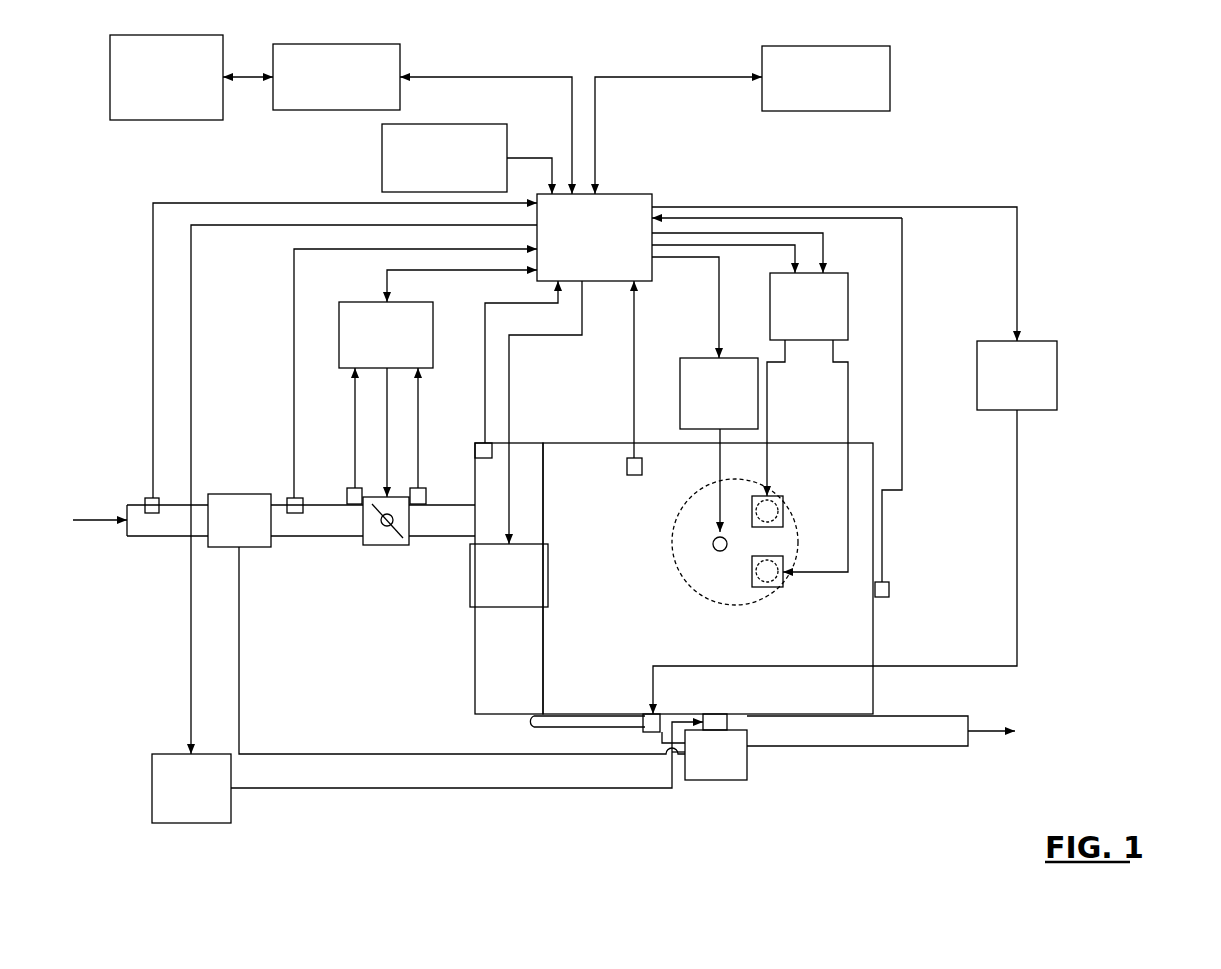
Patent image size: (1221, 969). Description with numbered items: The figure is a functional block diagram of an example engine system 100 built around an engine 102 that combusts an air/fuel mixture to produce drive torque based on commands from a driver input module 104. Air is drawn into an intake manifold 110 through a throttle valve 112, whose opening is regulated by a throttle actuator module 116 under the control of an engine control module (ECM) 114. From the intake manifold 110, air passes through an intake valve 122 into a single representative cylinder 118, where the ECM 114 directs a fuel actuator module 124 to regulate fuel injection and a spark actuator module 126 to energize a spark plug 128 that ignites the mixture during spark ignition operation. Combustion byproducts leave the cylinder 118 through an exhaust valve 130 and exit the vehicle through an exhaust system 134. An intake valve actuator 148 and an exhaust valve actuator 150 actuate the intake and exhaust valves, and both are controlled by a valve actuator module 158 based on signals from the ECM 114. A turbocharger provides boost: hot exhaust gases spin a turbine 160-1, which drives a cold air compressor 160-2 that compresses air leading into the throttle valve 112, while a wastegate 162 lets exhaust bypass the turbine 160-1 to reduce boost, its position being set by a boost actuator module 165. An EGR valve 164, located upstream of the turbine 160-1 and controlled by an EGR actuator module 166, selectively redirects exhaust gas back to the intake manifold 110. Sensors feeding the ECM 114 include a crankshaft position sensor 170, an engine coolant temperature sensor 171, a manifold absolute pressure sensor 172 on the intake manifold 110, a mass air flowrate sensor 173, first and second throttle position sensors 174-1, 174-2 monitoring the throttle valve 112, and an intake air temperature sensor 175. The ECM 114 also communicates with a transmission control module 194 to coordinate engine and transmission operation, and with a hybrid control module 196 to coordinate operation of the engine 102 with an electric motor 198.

The engine system 100 is at (1130, 48).
The engine 102 is at (587, 443).
The driver input module 104 is at (382, 158).
The intake manifold 110 is at (475, 650).
The throttle valve 112 is at (380, 547).
The engine control module (ECM) 114 is at (653, 194).
The throttle actuator module 116 is at (360, 302).
The cylinder 118 is at (700, 597).
The intake valve 122 is at (783, 496).
The fuel actuator module 124 is at (528, 607).
The spark actuator module 126 is at (697, 357).
The spark plug 128 is at (713, 546).
The exhaust valve 130 is at (783, 590).
The exhaust system 134 is at (515, 820).
The intake valve actuator 148 is at (783, 511).
The exhaust valve actuator 150 is at (767, 588).
The valve actuator module 158 is at (849, 285).
The turbine 160-1 is at (747, 762).
The cold air compressor 160-2 is at (258, 548).
The wastegate 162 is at (727, 714).
The EGR valve 164 is at (650, 732).
The boost actuator module 165 is at (230, 815).
The EGR actuator module 166 is at (990, 341).
The crankshaft position sensor 170 is at (889, 585).
The engine coolant temperature (ECT) sensor 171 is at (634, 475).
The manifold absolute pressure (MAP) sensor 172 is at (480, 443).
The mass air flowrate (MAF) sensor 173 is at (288, 498).
The first throttle position sensor 174-1 is at (352, 505).
The second throttle position sensor 174-2 is at (417, 506).
The intake air temperature (IAT) sensor 175 is at (146, 498).
The transmission control module 194 is at (762, 60).
The hybrid control module 196 is at (305, 110).
The electric motor 198 is at (168, 120).